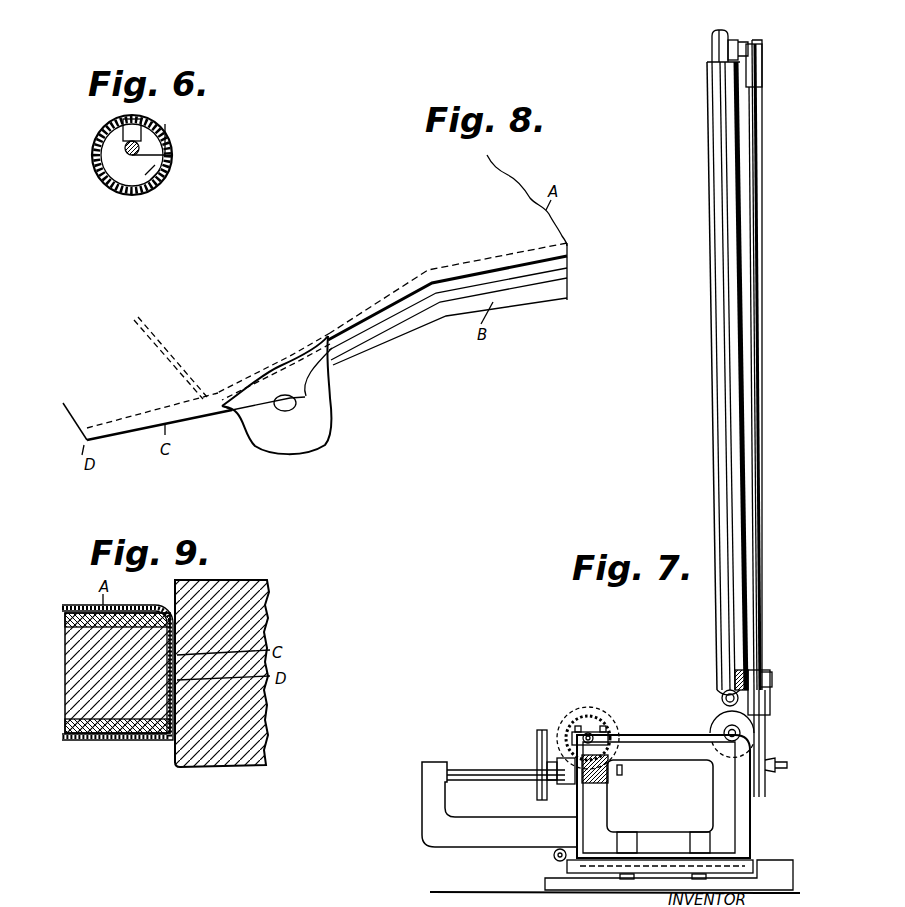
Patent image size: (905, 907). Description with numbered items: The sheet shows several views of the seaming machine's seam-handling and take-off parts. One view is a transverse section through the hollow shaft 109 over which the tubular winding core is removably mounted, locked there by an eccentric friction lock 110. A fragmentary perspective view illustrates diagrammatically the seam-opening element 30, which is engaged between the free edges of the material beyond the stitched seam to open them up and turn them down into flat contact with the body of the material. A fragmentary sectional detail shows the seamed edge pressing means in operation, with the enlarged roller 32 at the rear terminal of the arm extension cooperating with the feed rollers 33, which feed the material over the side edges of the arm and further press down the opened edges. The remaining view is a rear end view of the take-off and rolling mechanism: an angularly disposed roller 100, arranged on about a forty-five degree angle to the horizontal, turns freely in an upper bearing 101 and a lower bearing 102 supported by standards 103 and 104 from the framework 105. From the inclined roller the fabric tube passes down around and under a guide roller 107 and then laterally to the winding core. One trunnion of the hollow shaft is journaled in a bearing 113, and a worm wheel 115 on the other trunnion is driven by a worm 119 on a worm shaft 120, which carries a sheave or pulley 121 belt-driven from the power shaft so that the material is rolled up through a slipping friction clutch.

In FIG. 8, the seam-opening element 30 is at (308, 383).
In FIG. 9, the enlarged roller 32 is at (70, 678).
In FIG. 9, the feed rollers 33 is at (254, 580).
In FIG. 7, the angularly disposed roller 100 is at (713, 441).
In FIG. 7, the upper bearing 101 is at (729, 40).
In FIG. 7, the lower bearing 102 is at (757, 672).
In FIG. 7, the standard 103 is at (763, 481).
In FIG. 7, the standard 104 is at (766, 735).
In FIG. 7, the framework 105 is at (662, 745).
In FIG. 7, the guide roller 107 is at (726, 730).
In FIG. 6, the hollow shaft 109 is at (160, 170).
In FIG. 6, the eccentric friction lock 110 is at (141, 119).
In FIG. 7, the bearing 113 is at (574, 735).
In FIG. 7, the worm wheel 115 is at (598, 719).
In FIG. 7, the worm 119 is at (588, 774).
In FIG. 7, the worm shaft 120 is at (492, 780).
In FIG. 7, the sheave or pulley 121 is at (537, 745).